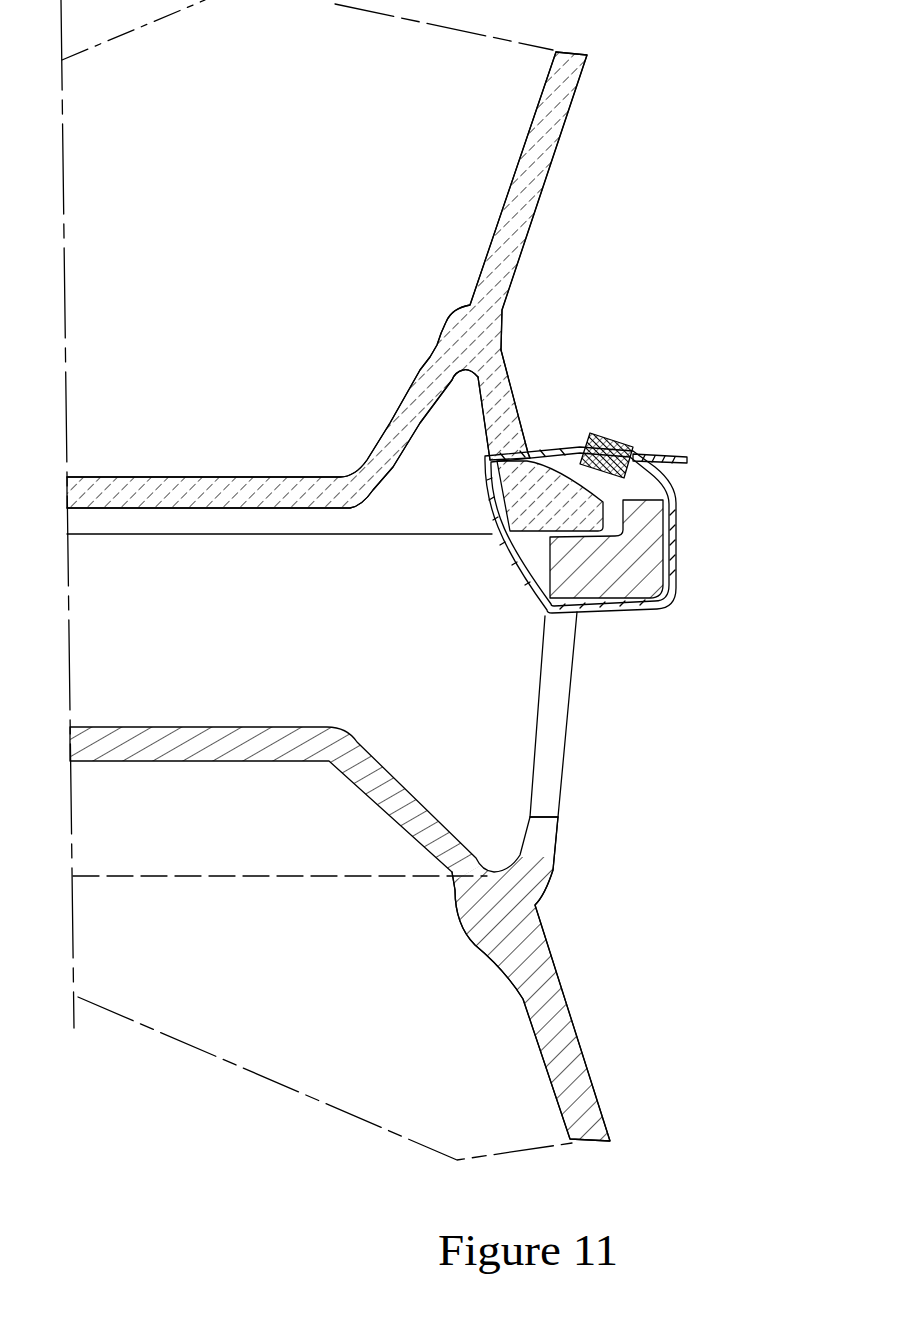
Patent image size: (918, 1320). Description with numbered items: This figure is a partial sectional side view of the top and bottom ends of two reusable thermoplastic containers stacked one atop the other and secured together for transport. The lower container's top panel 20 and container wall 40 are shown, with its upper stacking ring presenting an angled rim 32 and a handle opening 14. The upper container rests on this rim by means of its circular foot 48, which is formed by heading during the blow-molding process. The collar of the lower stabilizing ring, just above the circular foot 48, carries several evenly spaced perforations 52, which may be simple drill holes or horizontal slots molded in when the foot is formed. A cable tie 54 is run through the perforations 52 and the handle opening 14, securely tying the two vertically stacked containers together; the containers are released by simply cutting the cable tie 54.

The handle opening 14 is at (548, 760).
The top panel 20 is at (200, 743).
The angled rim 32 is at (613, 570).
The container wall 40 is at (559, 80).
The circular foot 48 is at (537, 505).
The perforations 52 is at (507, 438).
The cable ties 54 is at (668, 479).